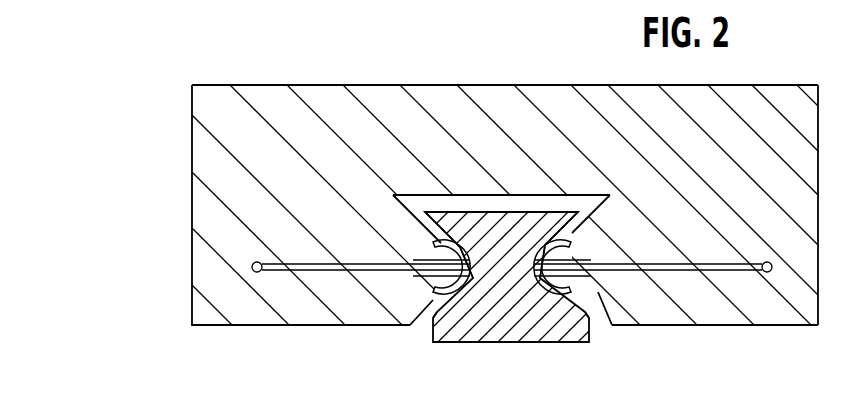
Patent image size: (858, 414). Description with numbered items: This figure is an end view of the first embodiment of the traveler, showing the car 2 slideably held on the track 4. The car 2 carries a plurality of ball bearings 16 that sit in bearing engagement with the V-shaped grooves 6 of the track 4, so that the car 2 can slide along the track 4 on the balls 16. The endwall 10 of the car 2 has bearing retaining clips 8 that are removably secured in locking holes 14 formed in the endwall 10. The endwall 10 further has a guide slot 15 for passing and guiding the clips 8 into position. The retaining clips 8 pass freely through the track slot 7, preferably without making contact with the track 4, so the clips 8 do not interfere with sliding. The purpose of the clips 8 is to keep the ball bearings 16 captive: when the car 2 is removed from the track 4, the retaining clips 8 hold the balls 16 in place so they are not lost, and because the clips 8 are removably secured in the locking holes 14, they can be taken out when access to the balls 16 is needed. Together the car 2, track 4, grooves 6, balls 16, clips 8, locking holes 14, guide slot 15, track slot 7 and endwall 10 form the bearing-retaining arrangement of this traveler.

The car 2 is at (219, 85).
The track 4 is at (498, 343).
The V-shaped grooves 6 is at (433, 312).
The track slot 7 is at (487, 278).
The bearing retaining clips 8 is at (312, 271).
The endwall 10 is at (806, 210).
The locking holes 14 is at (256, 262).
The guide slot 15 is at (400, 200).
The ball bearings 16 is at (433, 282).